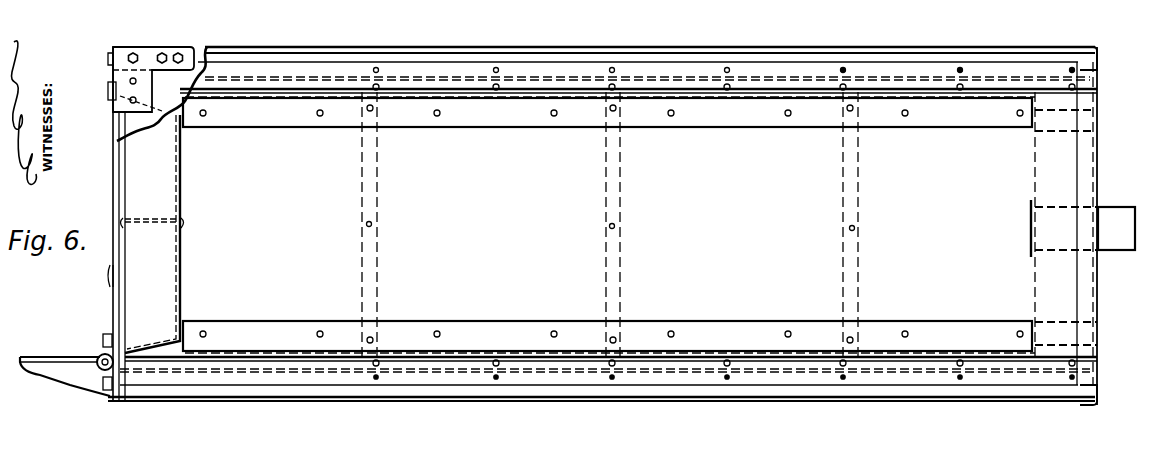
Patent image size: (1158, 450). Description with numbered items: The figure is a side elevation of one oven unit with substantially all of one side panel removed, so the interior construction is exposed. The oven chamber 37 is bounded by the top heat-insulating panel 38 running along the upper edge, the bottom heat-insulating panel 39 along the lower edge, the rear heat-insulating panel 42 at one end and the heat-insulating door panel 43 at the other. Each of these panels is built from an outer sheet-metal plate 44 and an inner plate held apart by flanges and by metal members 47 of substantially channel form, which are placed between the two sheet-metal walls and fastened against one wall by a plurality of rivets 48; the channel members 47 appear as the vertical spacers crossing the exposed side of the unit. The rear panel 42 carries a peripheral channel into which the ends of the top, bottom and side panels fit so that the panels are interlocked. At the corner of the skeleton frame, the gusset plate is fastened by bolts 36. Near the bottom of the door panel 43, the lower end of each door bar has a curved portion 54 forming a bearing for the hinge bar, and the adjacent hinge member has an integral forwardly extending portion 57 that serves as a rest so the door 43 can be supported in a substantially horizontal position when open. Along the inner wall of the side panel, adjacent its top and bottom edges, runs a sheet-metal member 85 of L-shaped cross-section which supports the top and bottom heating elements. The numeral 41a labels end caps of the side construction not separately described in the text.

The bolts 36 is at (162, 56).
The oven chamber 37 is at (493, 313).
The top heat-insulating panel 38 is at (670, 82).
The bottom heat-insulating panel 39 is at (652, 373).
The end caps 41a is at (1087, 68).
The rear heat-insulating panel 42 is at (1067, 173).
The heat-insulating door panel 43 is at (135, 174).
The outer sheet-metal plate 44 is at (559, 440).
The channel-form metal members 47 is at (357, 182).
The rivets 48 is at (372, 224).
The curved portion 54 is at (102, 355).
The forwardly extending portion 57 is at (32, 368).
The sheet-metal member 85 is at (742, 122).